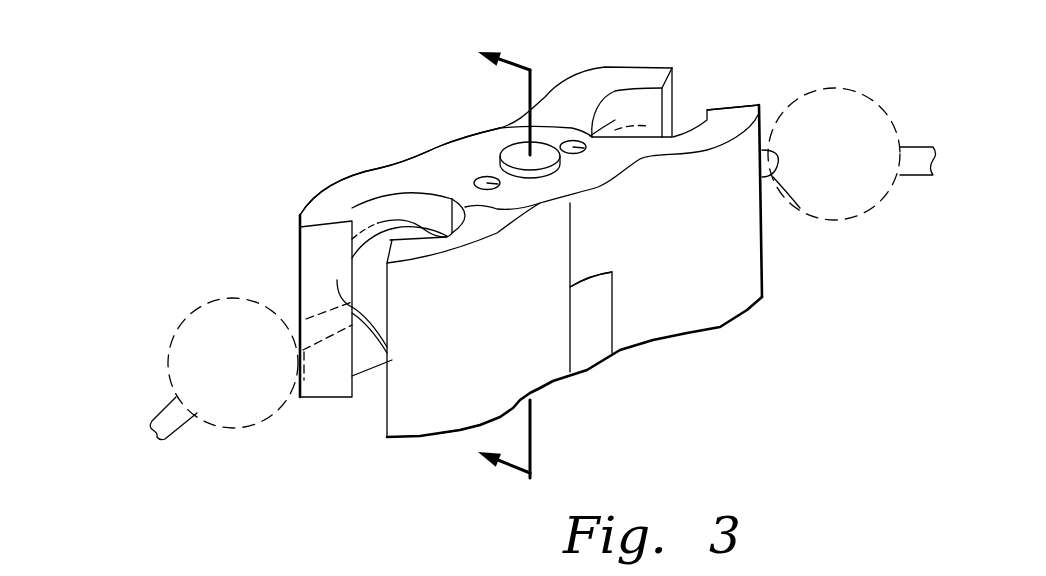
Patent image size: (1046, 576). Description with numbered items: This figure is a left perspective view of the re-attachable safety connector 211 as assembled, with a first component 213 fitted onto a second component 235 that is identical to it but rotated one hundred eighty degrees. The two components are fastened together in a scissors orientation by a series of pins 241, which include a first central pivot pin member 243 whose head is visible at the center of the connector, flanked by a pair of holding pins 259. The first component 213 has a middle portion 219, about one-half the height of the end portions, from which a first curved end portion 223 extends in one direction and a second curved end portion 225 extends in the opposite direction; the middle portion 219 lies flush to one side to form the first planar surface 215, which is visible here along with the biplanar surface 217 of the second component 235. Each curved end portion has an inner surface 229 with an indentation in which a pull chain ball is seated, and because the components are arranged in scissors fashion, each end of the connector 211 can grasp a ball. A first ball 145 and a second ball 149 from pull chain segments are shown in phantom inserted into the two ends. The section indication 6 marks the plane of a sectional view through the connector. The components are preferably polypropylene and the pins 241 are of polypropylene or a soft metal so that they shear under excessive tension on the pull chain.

The section line 6- 6 is at (496, 259).
The pull chain ball 145 is at (183, 323).
The pull chain ball 149 is at (848, 88).
The re-attachable safety connector 211 is at (147, 198).
The first component 213 is at (752, 257).
The first planar surface 215 is at (732, 120).
The biplanar surface 217 is at (620, 78).
The middle portion 219 is at (524, 106).
The first curved end portion 223 is at (567, 457).
The second curved end portion 225 is at (792, 300).
The inner surface 229 is at (652, 100).
The second component 235 is at (397, 402).
The series of pins 241 is at (733, 177).
The first central pivot pin member 243 is at (548, 161).
The holding pins 259 is at (594, 125).